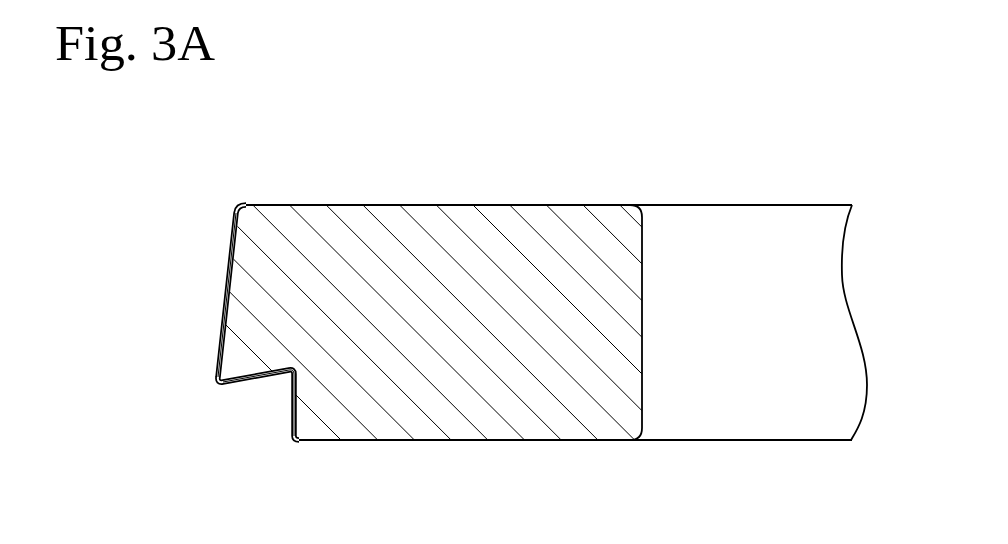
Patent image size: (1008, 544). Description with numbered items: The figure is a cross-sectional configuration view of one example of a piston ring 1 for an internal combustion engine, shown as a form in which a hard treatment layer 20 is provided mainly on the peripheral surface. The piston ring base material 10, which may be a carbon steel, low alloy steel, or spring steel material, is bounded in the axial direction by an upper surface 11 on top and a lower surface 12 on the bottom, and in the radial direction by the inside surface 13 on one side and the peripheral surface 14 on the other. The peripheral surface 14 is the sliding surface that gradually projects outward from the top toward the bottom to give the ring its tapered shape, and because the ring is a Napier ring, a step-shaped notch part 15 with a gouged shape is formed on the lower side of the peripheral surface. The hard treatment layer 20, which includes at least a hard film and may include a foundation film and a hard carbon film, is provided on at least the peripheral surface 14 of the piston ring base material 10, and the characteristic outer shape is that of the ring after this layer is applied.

The piston ring 1 is at (597, 132).
The piston ring base material 10 is at (687, 205).
The upper surface 11 is at (442, 205).
The lower surface 12 is at (433, 442).
The inside surface 13 is at (645, 308).
The peripheral surface 14 is at (231, 241).
The step-shaped notch part 15 is at (252, 440).
The hard treatment layer 20 is at (226, 308).